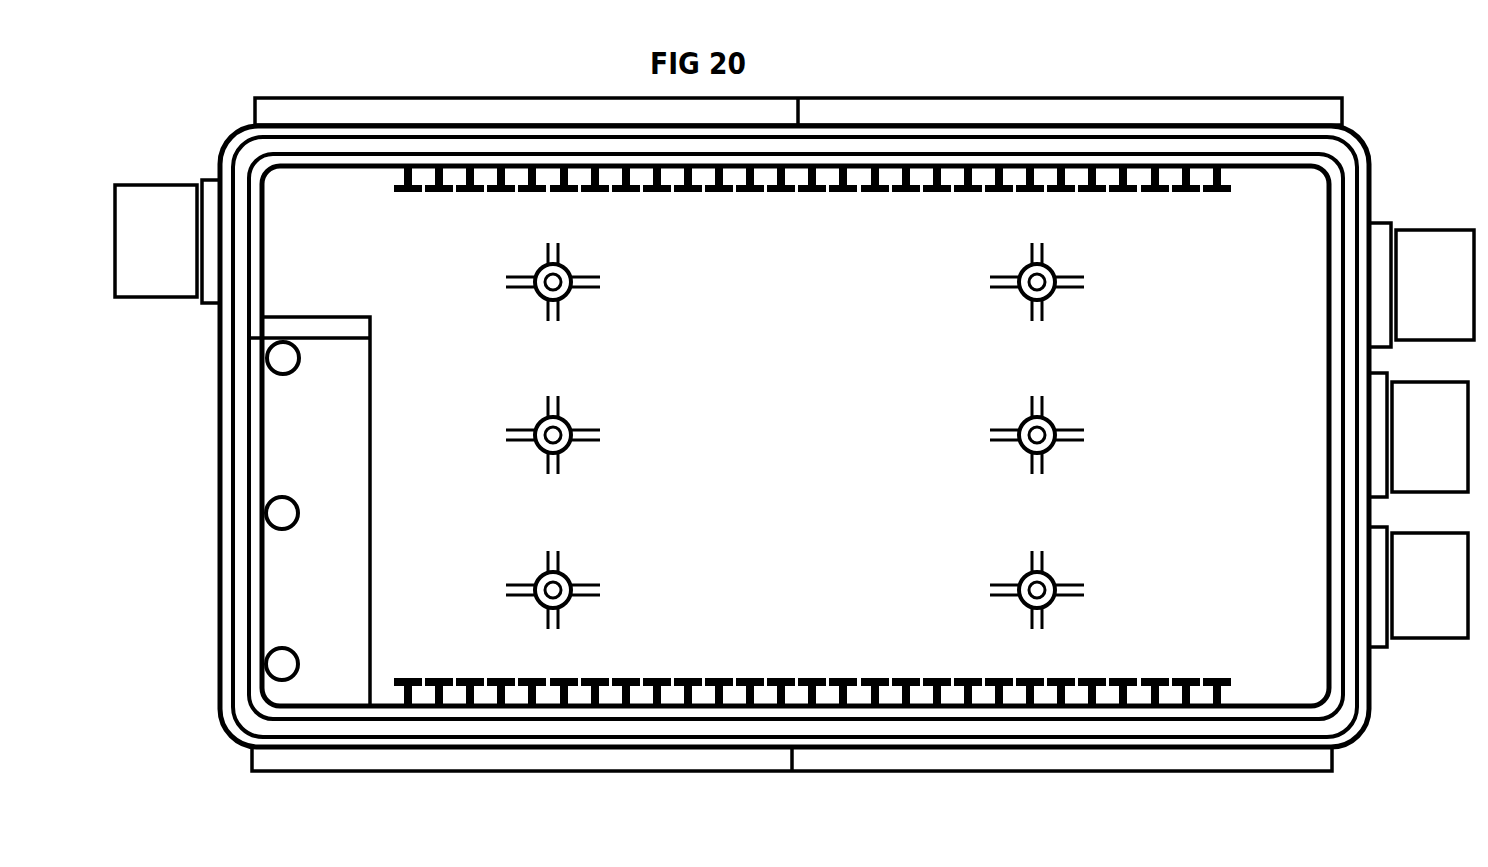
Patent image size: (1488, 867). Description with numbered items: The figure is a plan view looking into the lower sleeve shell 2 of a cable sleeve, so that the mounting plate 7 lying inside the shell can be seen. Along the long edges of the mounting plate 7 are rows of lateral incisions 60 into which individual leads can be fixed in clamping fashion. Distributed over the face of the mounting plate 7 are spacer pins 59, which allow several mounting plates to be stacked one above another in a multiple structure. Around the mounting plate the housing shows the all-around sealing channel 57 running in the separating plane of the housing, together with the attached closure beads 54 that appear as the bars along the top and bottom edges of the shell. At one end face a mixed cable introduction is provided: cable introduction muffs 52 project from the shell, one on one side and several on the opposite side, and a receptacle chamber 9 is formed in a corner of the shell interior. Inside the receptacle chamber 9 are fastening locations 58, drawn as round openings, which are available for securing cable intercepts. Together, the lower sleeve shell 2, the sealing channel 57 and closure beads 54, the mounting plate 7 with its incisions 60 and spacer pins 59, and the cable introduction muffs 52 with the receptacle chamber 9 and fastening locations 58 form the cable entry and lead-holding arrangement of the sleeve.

The lower sleeve shell 2 is at (1340, 738).
The mounting plate 7 is at (1243, 192).
The receptacle chamber 9 is at (357, 513).
The cable introduction muff 52 is at (178, 205).
The closure bead 54 is at (516, 113).
The sealing channel 57 is at (430, 147).
The fastening location 58 is at (288, 520).
The spacer pin 59 is at (560, 286).
The lateral incision 60 is at (916, 176).